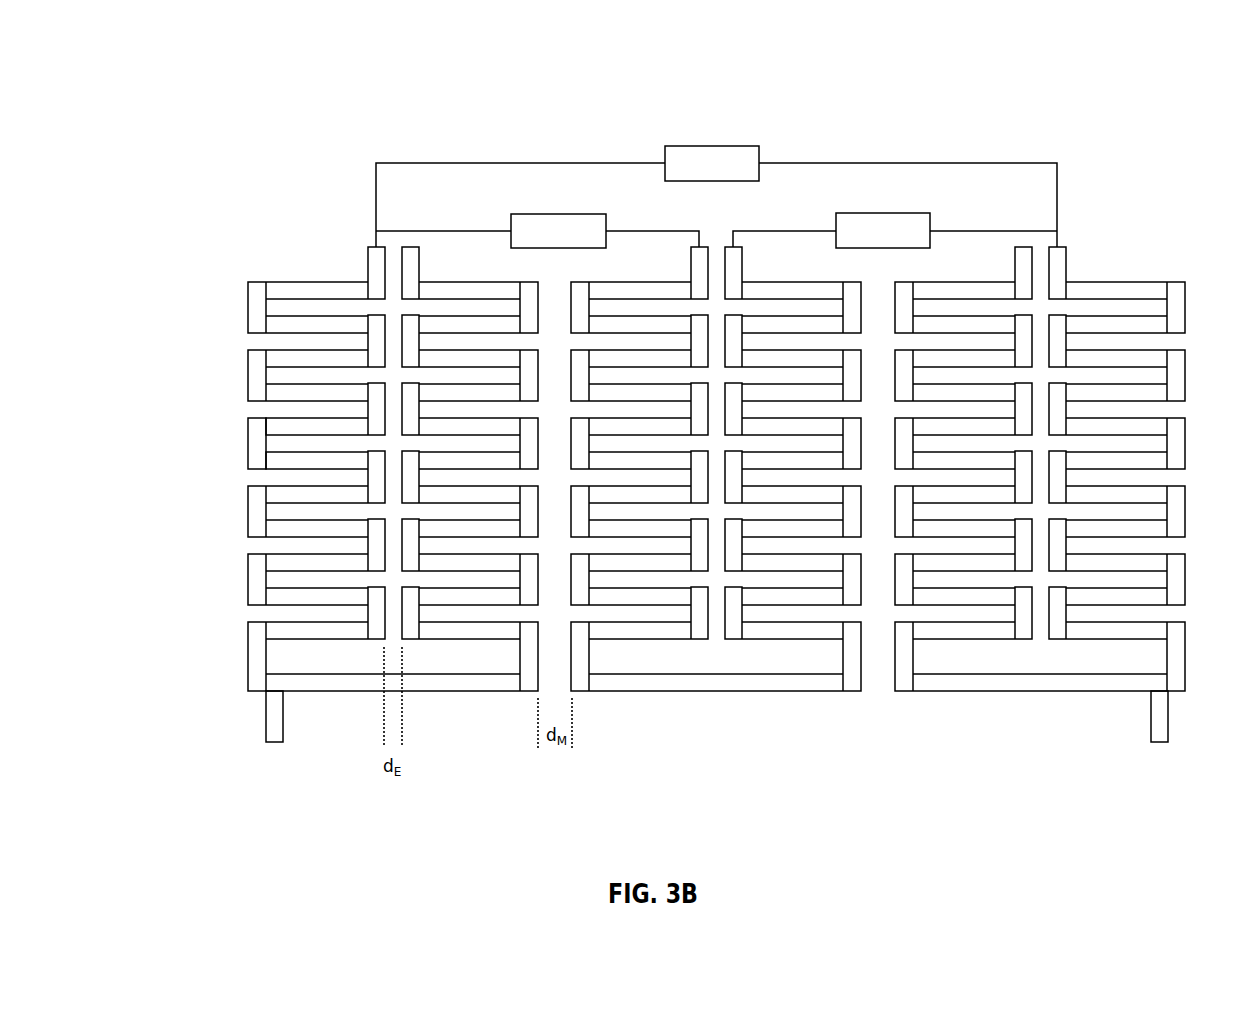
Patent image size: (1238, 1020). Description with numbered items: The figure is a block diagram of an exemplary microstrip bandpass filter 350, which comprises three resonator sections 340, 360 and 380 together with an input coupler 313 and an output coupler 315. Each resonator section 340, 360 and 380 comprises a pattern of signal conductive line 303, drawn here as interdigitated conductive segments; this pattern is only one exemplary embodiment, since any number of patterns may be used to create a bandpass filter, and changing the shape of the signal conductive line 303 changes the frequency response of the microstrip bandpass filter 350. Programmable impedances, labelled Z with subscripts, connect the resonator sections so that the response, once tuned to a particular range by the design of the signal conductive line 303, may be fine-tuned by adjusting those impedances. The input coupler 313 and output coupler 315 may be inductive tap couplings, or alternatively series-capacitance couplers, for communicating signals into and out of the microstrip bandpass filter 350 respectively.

The microstrip bandpass filter 350 is at (240, 82).
The resonator section 340 is at (279, 242).
The resonator section 360 is at (805, 198).
The resonator section 380 is at (1111, 216).
The signal conductive line 303 is at (249, 429).
The input coupler 313 is at (266, 716).
The output coupler 315 is at (1168, 716).